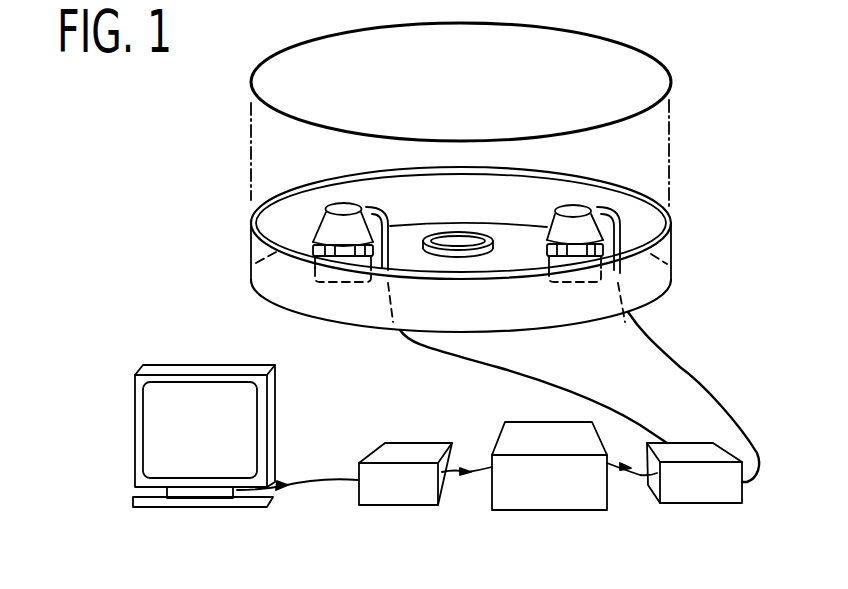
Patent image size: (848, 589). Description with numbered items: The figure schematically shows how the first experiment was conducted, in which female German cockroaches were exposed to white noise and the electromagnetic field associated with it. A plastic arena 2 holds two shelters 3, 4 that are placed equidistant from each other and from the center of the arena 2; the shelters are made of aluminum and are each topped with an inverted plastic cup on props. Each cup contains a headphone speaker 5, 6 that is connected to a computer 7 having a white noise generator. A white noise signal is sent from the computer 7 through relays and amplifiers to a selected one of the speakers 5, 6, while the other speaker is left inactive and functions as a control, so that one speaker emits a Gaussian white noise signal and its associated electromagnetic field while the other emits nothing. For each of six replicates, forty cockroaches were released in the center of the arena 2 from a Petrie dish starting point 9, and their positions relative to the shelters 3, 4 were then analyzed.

The plastic arena 2 is at (609, 50).
The shelter 3 is at (365, 262).
The shelter 4 is at (557, 265).
The headphone speaker 5 is at (344, 206).
The headphone speaker 6 is at (573, 208).
The computer 7 is at (198, 507).
The Petrie dish starting point 9 is at (457, 245).